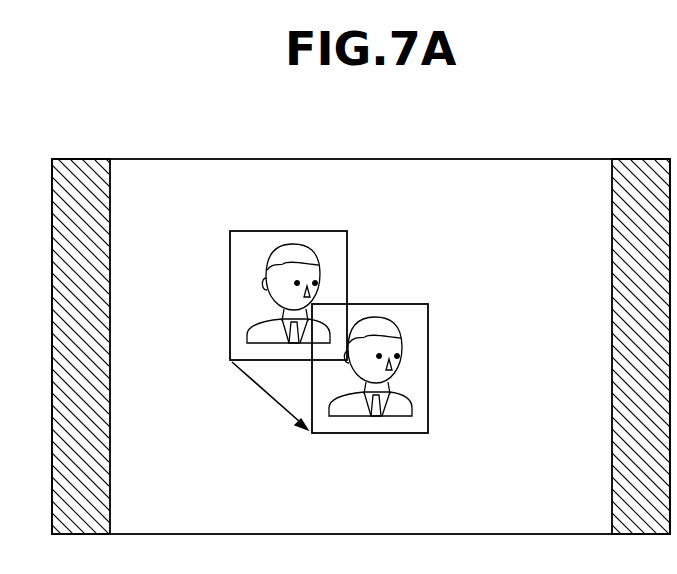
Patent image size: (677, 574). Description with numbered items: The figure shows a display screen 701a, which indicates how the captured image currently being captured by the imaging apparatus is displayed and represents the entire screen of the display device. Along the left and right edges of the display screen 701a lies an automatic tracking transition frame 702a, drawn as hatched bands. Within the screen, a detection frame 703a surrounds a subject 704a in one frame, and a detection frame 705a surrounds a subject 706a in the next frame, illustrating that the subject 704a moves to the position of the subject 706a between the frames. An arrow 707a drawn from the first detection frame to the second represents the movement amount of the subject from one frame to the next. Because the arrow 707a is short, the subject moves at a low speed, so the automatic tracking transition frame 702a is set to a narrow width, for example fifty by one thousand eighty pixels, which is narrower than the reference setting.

The display screen 701a is at (391, 158).
The automatic tracking transition frame 702a is at (87, 158).
The detection frame 703a is at (295, 230).
The subject 704a is at (321, 265).
The detection frame 705a is at (429, 395).
The subject 706a is at (402, 340).
The arrow 707a is at (263, 393).